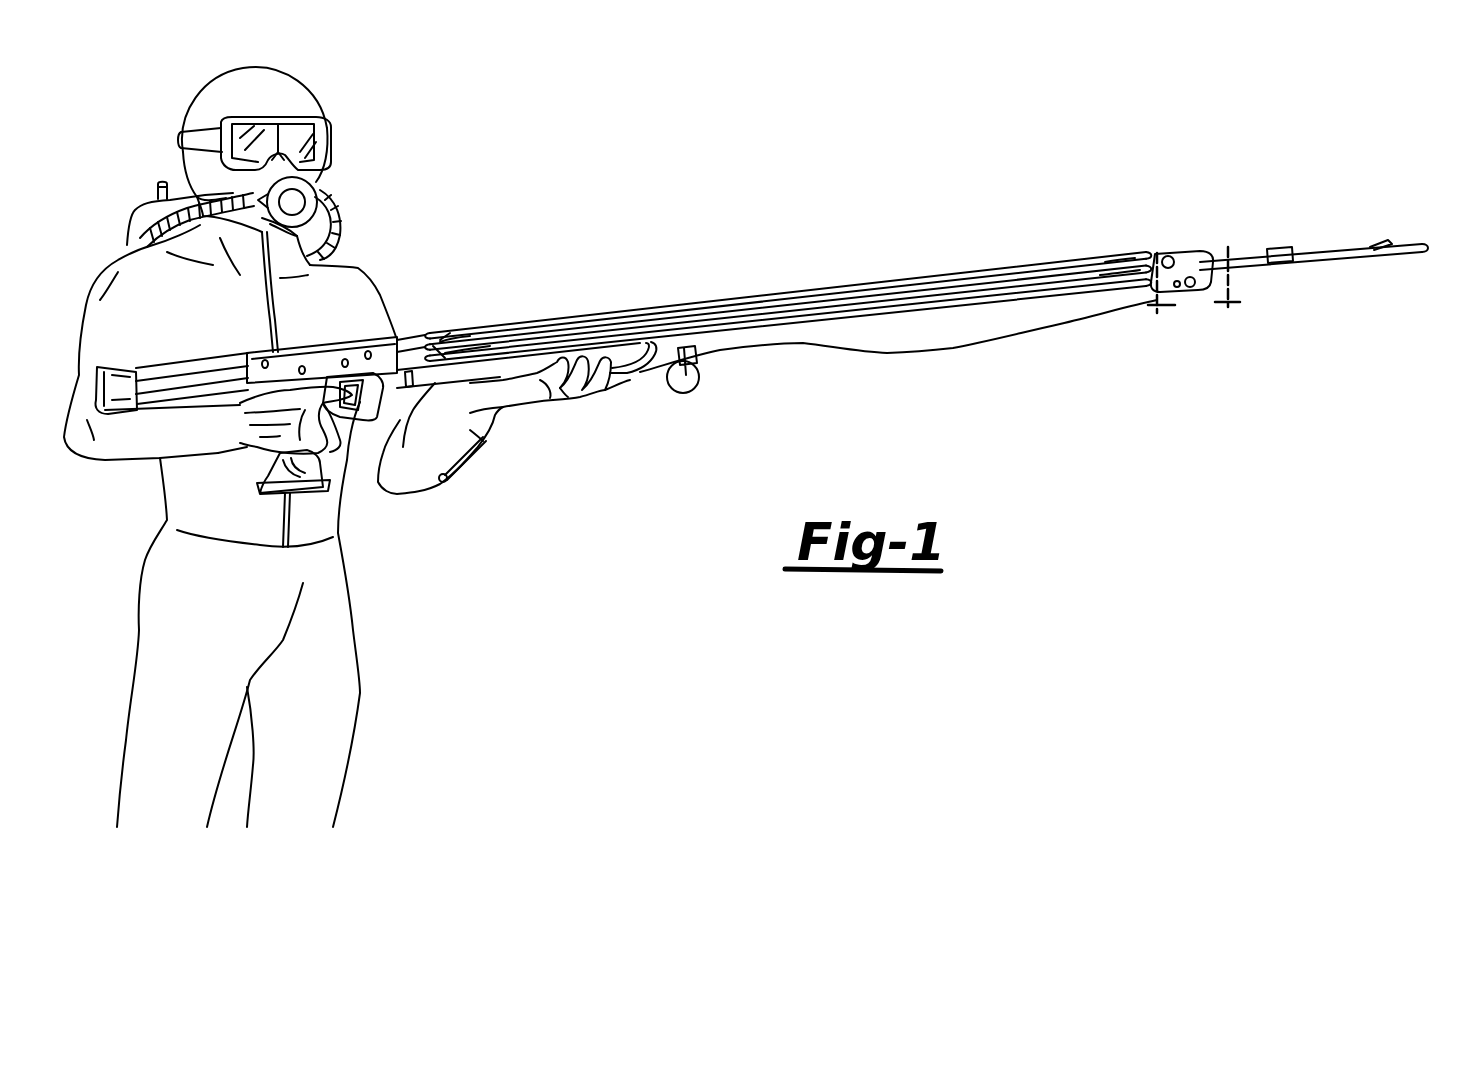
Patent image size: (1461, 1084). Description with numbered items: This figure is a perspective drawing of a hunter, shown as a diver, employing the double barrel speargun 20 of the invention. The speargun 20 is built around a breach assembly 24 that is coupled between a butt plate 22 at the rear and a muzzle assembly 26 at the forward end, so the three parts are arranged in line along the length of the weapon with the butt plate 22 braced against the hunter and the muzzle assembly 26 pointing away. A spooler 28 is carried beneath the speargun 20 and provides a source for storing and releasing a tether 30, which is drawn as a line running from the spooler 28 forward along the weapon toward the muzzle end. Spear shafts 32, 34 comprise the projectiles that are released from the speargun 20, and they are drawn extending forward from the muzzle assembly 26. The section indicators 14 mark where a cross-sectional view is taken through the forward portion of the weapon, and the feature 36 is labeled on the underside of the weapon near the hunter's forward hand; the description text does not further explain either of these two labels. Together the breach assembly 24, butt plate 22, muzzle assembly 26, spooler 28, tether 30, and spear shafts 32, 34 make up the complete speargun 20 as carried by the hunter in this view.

The section line 14 is at (1193, 296).
The double barrel speargun 20 is at (668, 283).
The butt plate 22 is at (105, 452).
The breach assembly 24 is at (385, 331).
The muzzle assembly 26 is at (910, 283).
The spooler 28 is at (703, 384).
The tether 30 is at (957, 350).
The spear shaft 32 is at (1337, 241).
The spear shaft 34 is at (1410, 243).
The lower tube fitting 36 is at (455, 402).